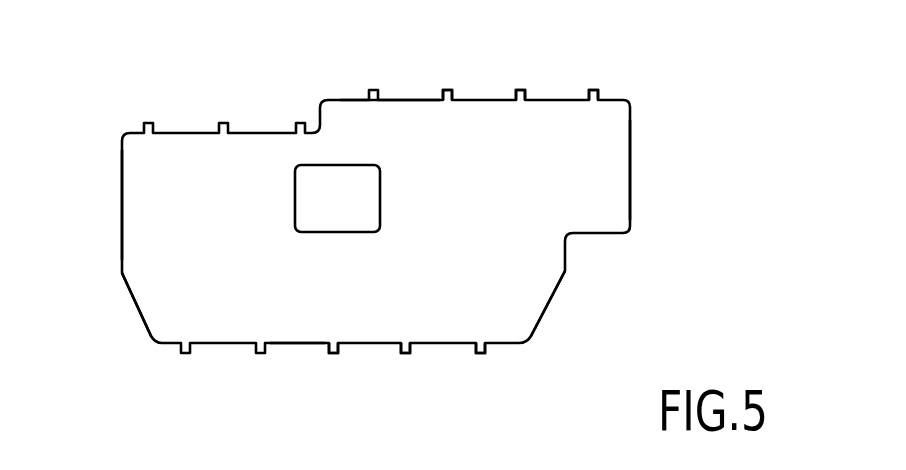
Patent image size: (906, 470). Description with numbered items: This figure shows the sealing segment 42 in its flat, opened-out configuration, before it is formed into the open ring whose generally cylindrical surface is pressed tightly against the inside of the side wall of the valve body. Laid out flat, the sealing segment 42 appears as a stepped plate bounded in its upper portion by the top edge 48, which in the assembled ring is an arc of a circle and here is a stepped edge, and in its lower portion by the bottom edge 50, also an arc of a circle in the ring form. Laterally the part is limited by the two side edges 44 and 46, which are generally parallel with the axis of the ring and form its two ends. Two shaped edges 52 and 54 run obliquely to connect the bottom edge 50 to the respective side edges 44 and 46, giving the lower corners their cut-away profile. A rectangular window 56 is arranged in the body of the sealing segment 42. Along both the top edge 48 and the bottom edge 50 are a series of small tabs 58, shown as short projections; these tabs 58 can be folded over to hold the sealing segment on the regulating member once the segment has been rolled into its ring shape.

The sealing segment 42 is at (617, 82).
The side edge 44 is at (122, 191).
The side edge 46 is at (630, 186).
The top edge 48 is at (407, 98).
The bottom edge 50 is at (293, 345).
The shaped edge 52 is at (138, 306).
The shaped edge 54 is at (547, 303).
The window 56 is at (380, 188).
The tabs 58 is at (593, 90).